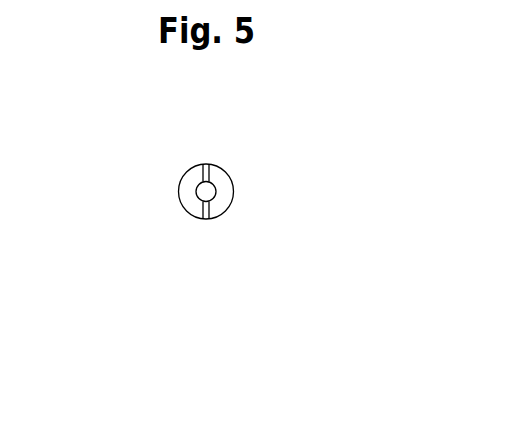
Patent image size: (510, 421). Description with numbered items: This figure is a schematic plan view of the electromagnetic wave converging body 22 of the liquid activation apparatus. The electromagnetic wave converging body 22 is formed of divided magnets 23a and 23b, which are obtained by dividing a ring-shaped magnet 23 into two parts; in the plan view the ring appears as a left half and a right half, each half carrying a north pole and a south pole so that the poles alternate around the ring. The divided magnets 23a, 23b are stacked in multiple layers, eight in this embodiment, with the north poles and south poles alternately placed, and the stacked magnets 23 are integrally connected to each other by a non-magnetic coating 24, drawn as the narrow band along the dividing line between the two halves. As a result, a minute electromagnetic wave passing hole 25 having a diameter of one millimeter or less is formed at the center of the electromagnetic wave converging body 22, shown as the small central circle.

The electromagnetic wave converging body 22 is at (248, 173).
The ring-shaped magnet 23 is at (157, 278).
The divided magnet 23a is at (185, 212).
The divided magnet 23b is at (228, 212).
The non-magnetic coating 24 is at (207, 164).
The electromagnetic wave passing hole 25 is at (208, 192).